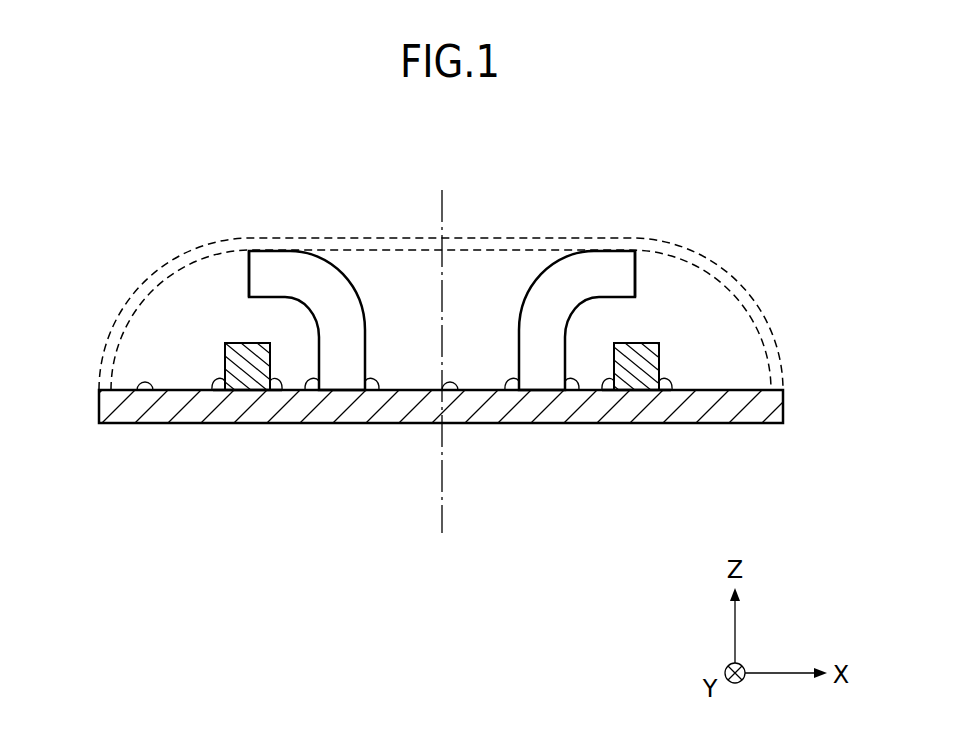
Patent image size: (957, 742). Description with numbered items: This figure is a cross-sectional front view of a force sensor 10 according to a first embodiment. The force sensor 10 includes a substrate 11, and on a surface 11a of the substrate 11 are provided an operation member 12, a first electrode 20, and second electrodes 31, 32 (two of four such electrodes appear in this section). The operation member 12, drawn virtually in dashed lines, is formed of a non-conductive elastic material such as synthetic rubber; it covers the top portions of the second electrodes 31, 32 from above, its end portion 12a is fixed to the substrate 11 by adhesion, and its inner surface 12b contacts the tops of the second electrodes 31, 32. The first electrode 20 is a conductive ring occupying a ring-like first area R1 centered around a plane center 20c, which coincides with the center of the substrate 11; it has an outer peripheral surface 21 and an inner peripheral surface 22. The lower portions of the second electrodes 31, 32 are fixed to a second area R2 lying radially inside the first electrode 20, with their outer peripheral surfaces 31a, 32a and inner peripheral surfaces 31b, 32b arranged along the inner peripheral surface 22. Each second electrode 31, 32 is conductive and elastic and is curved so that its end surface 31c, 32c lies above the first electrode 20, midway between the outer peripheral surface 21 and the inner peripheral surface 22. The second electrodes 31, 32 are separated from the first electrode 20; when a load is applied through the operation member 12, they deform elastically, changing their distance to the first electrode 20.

The force sensor 10 is at (781, 451).
The substrate 11 is at (783, 398).
The surface of the substrate 11a is at (145, 392).
The operation member 12 is at (472, 238).
The end portion 12a is at (763, 312).
The inner surface 12b is at (140, 310).
The first electrode 20 is at (262, 393).
The plane center 20c is at (450, 393).
The outer peripheral surface 21 is at (218, 393).
The inner peripheral surface 22 is at (276, 393).
The second electrode 31 is at (352, 275).
The outer peripheral surface 31a is at (313, 393).
The inner peripheral surface 31b is at (370, 393).
The end surface 31c is at (249, 275).
The second electrode 32 is at (532, 275).
The outer peripheral surface 32a is at (570, 393).
The inner peripheral surface 32b is at (512, 393).
The end surface 32c is at (635, 275).
The first area R1 is at (235, 405).
The second area R2 is at (342, 405).